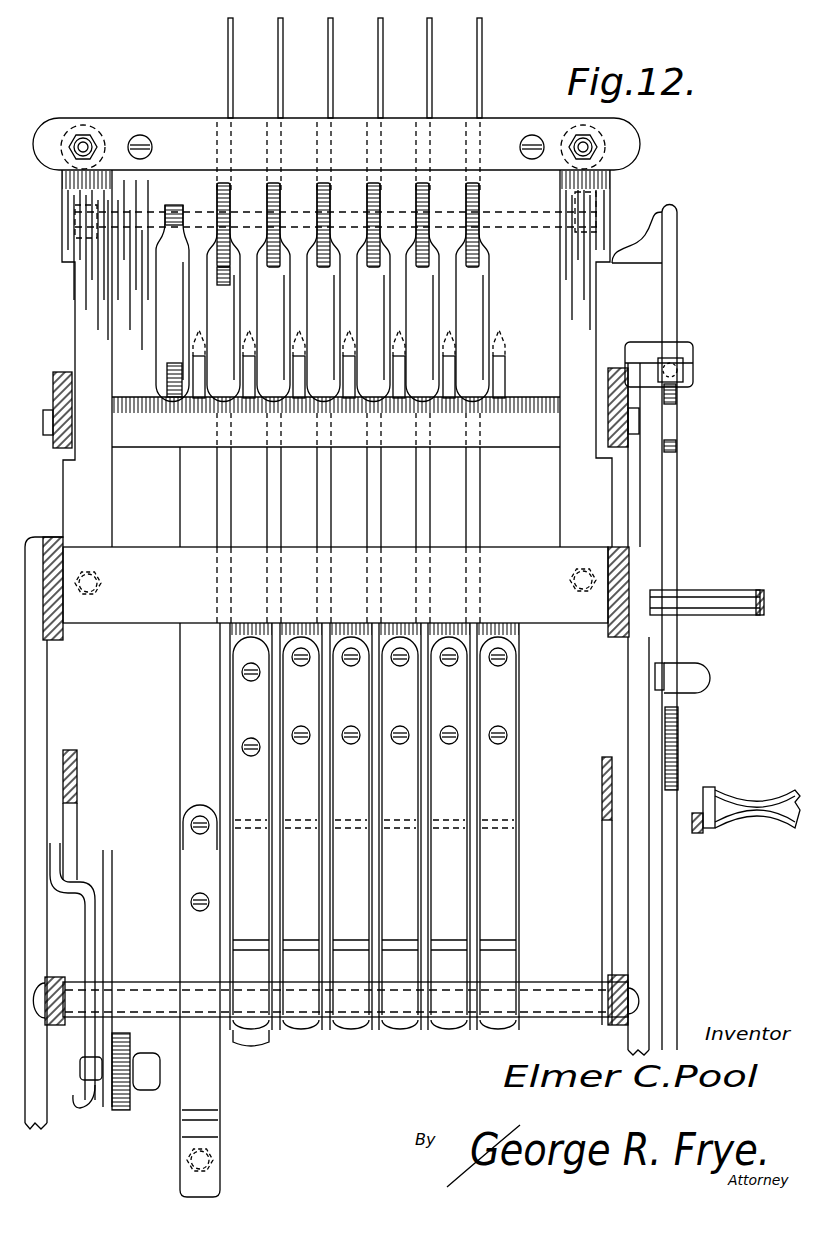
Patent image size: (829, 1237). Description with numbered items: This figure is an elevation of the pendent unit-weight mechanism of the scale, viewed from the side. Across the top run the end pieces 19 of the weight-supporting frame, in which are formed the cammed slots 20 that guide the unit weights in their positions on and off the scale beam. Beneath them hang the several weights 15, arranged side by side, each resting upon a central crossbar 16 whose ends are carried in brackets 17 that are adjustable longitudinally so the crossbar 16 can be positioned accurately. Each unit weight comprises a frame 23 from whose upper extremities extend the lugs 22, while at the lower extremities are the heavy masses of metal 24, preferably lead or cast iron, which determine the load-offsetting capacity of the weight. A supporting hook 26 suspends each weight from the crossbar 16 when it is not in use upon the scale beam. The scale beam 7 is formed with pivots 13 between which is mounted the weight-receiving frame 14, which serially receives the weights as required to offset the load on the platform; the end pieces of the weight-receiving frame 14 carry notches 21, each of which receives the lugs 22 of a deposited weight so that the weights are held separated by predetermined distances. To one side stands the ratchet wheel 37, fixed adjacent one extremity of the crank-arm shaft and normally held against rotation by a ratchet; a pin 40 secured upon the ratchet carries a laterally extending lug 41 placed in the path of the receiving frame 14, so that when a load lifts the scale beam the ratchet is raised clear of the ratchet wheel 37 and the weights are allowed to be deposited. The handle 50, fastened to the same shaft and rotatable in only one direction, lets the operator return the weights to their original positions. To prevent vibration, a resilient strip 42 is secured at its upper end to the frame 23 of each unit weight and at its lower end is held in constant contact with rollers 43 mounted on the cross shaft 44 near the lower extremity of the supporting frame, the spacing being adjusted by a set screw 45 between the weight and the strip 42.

The scale beam 7 is at (60, 398).
The pivots 13 is at (48, 428).
The weight-receiving frame 14 is at (548, 436).
The weights 15 is at (470, 1028).
The crossbar 16 is at (167, 215).
The brackets 17 is at (75, 200).
The end pieces 19 is at (168, 178).
The cammed slots 20 is at (172, 205).
The notches 21 is at (330, 402).
The lugs 22 is at (416, 186).
The frame 23 is at (243, 498).
The heavy masses of metal 24 is at (522, 897).
The supporting hook 26 is at (428, 50).
The ratchet wheel 37 is at (680, 733).
The pin 40 is at (678, 300).
The lug 41 is at (643, 256).
The resilient strips 42 is at (450, 775).
The rollers 43 is at (200, 997).
The cross shaft 44 is at (570, 1008).
The set screw 45 is at (215, 1155).
The handle 50 is at (753, 800).